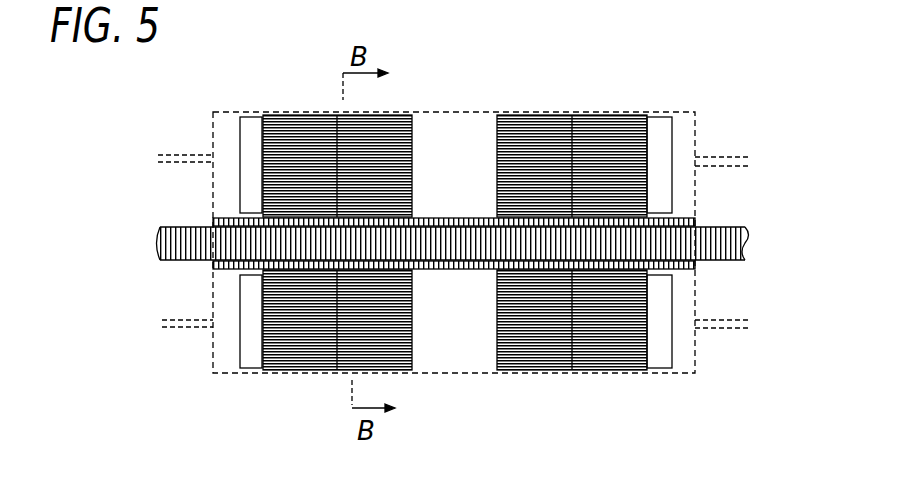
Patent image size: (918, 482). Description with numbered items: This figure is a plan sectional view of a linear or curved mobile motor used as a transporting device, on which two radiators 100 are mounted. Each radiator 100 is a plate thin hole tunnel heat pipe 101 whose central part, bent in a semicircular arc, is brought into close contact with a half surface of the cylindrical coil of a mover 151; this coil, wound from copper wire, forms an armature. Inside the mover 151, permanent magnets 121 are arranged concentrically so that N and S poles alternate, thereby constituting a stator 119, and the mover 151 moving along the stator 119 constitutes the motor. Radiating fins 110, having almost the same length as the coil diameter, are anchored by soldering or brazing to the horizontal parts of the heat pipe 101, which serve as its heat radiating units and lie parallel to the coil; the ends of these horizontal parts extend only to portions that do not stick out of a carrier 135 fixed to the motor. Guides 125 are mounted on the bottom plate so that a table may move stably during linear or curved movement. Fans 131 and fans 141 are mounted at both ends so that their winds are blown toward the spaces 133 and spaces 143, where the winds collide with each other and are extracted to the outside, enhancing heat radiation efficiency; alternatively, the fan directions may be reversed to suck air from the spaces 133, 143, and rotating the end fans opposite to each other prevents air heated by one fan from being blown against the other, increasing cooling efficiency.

The radiator 100 is at (494, 360).
The plate thin hole tunnel heat pipe 101 is at (497, 213).
The radiating fins 110 is at (297, 137).
The stator 119 is at (728, 227).
The permanent magnets 121 is at (181, 227).
The guides 125 is at (160, 160).
The fans 131 is at (252, 156).
The spaces 133 is at (445, 145).
The carrier 135 is at (213, 112).
The fans 141 is at (252, 333).
The spaces 143 is at (500, 373).
The mover 151 is at (215, 268).